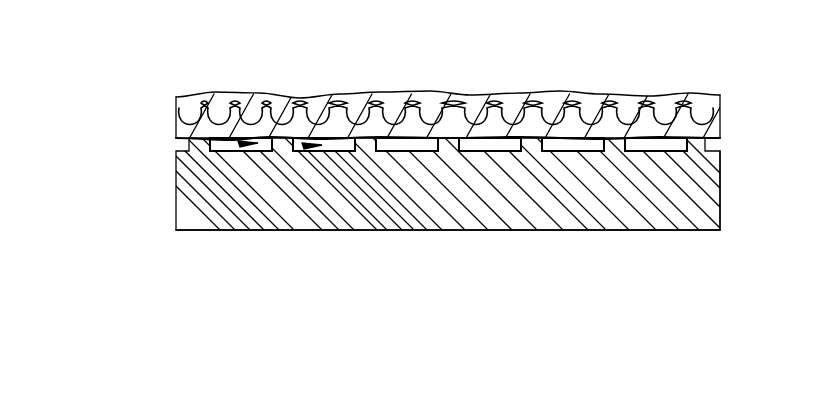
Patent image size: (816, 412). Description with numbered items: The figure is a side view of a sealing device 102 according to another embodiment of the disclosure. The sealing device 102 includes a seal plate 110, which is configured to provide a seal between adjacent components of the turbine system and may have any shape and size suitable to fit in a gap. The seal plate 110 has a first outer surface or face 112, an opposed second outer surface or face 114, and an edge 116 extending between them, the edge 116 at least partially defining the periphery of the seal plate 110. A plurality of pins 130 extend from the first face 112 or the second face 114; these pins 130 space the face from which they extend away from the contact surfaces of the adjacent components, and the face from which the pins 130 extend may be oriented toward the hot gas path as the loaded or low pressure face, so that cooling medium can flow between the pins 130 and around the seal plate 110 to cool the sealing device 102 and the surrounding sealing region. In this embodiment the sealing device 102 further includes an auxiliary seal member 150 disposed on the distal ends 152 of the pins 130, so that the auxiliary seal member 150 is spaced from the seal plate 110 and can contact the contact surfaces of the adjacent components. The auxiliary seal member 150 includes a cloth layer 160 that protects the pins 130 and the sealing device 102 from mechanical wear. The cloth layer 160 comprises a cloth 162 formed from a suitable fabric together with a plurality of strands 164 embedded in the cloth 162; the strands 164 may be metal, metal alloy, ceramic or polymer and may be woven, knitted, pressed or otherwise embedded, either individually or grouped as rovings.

The sealing device 102 is at (123, 139).
The seal plate 110 is at (165, 198).
The first outer surface or face 112 is at (562, 147).
The second outer surface or face 114 is at (617, 231).
The edge 116 is at (722, 182).
The pins 130 is at (300, 147).
The auxiliary seal member 150 is at (165, 108).
The distal ends 152 is at (293, 137).
The cloth layer 160 is at (653, 84).
The cloth 162 is at (690, 103).
The strands 164 is at (705, 94).